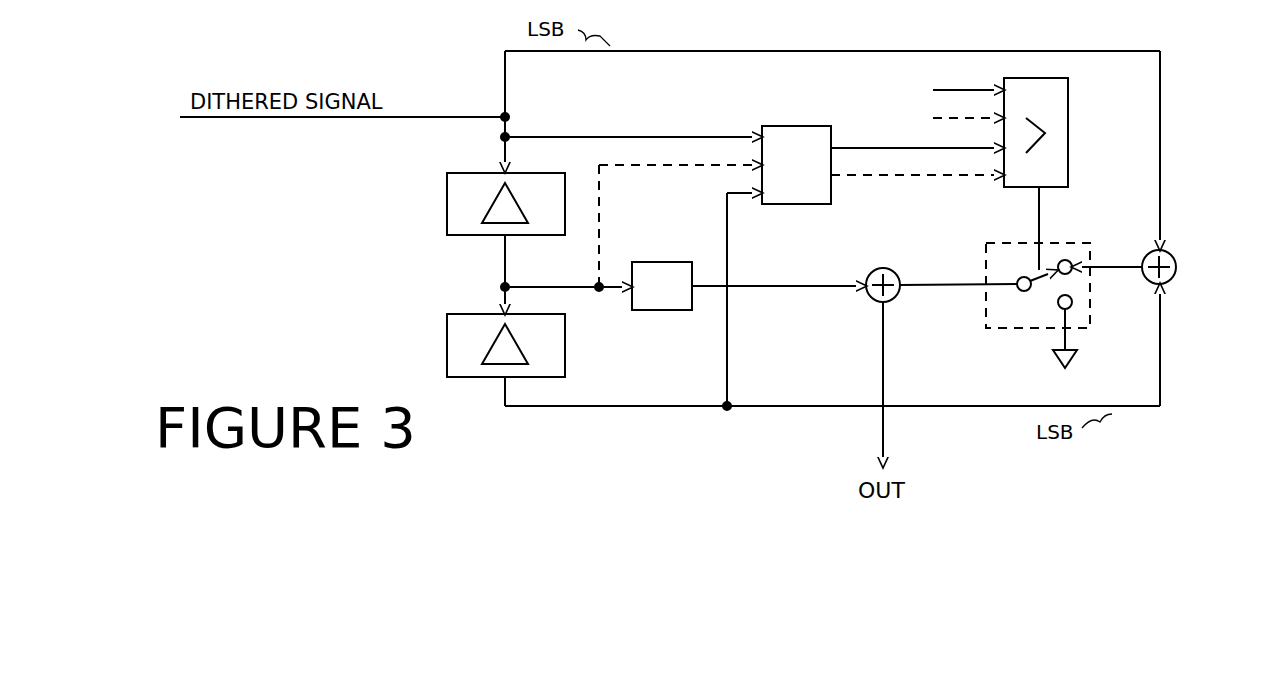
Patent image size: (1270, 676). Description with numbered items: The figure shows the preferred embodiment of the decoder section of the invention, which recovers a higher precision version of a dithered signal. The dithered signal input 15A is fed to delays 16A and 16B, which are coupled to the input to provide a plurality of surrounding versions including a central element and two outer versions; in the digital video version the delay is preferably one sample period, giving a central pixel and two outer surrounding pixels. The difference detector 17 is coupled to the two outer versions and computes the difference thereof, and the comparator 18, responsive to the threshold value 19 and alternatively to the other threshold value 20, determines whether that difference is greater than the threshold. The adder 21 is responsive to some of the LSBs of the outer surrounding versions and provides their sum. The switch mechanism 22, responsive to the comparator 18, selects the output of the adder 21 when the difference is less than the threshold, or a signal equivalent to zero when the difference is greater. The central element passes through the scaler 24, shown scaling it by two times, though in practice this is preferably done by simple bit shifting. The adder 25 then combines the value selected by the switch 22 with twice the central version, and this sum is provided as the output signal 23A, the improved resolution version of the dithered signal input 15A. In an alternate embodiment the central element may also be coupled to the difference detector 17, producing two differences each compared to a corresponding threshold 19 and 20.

The dithered signal input 15A is at (382, 122).
The delay 16A is at (443, 211).
The delay 16B is at (443, 353).
The difference detector 17 is at (793, 122).
The comparator 18 is at (1072, 127).
The threshold value 19 is at (932, 78).
The other threshold value 20 is at (932, 108).
The adder 21 is at (1178, 258).
The switch mechanism 22 is at (1012, 334).
The output signal 23A is at (890, 428).
The scaler 24 is at (662, 313).
The adder 25 is at (873, 306).